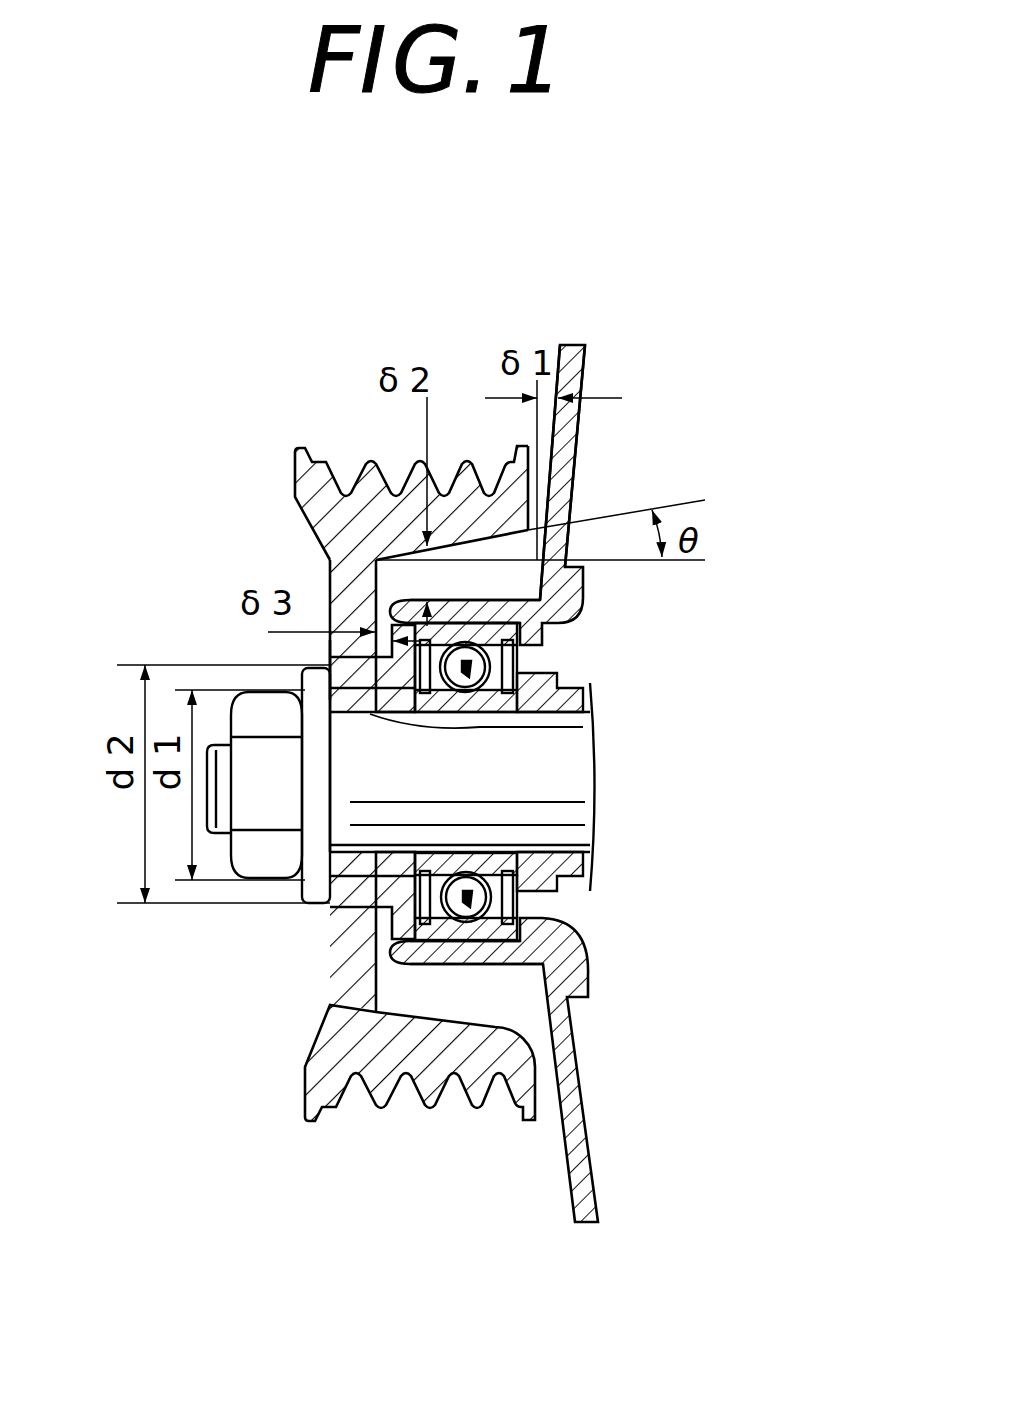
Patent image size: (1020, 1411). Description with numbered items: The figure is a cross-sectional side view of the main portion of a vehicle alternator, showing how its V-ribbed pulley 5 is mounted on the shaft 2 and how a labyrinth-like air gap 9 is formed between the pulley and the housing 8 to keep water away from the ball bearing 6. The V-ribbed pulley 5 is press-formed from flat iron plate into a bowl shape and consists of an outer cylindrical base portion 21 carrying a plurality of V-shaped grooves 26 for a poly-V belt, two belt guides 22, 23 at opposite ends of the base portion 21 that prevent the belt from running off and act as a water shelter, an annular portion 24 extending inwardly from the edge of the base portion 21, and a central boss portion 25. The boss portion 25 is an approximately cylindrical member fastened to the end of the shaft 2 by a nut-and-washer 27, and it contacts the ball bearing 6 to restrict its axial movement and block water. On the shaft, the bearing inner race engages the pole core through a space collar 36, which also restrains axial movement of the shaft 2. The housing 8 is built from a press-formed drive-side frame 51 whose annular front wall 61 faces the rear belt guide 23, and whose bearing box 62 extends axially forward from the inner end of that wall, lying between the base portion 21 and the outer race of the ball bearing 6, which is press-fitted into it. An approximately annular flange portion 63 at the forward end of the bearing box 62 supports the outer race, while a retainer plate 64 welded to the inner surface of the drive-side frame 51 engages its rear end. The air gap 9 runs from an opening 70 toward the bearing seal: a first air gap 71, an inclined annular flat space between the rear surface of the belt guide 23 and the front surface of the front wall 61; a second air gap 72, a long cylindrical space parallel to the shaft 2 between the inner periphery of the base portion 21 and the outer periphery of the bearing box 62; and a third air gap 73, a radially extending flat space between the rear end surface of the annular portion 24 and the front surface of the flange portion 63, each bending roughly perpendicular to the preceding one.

The shaft 2 is at (570, 813).
The V-ribbed pulley 5 is at (268, 418).
The ball bearing 6 is at (560, 678).
The housing 8 is at (475, 762).
The air gap 9 is at (438, 1010).
The base portion 21 is at (353, 482).
The belt guide 22 is at (296, 490).
The belt guide 23 is at (510, 457).
The annular portion 24 is at (343, 573).
The boss portion 25 is at (494, 704).
The V-shaped grooves 26 is at (407, 470).
The nut-and-washer 27 is at (285, 757).
The space collar 36 is at (580, 856).
The drive-side frame 51 is at (565, 1145).
The front wall 61 is at (590, 348).
The bearing box 62 is at (520, 640).
The flange portion 63 is at (400, 942).
The retainer plate 64 is at (580, 978).
The opening 70 is at (545, 427).
The first air gap 71 is at (538, 470).
The second air gap 72 is at (503, 583).
The third air gap 73 is at (323, 650).